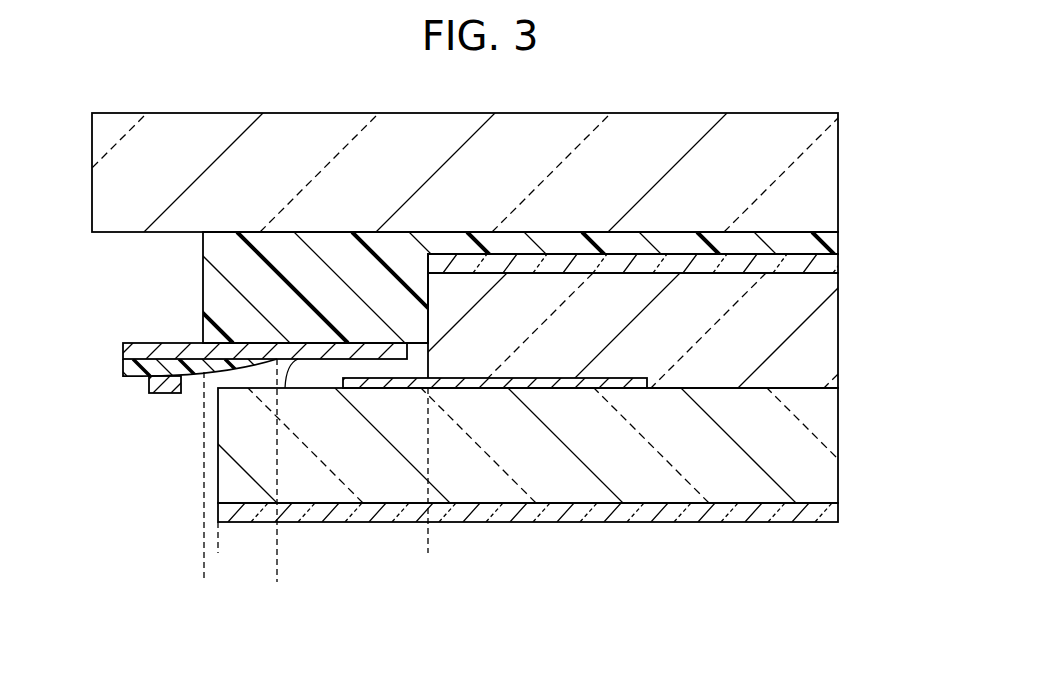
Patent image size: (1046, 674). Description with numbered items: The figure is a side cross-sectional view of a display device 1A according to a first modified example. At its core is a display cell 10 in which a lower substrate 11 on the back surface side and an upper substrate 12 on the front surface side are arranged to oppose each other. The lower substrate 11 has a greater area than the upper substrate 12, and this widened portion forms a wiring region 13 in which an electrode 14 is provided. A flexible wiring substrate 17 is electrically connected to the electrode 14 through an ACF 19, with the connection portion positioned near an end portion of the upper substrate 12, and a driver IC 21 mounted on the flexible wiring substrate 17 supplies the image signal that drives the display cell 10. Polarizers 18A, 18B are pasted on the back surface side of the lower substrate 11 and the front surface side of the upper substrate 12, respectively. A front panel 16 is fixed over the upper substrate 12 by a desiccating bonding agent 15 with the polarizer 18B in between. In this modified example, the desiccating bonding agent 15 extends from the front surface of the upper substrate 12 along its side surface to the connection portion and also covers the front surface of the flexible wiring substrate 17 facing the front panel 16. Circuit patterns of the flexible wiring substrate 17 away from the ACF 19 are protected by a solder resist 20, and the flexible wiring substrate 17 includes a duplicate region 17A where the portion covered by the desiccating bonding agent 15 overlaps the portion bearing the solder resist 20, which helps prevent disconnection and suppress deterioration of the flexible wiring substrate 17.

The display device 1A is at (672, 74).
The display cell 10 is at (563, 390).
The lower substrate 11 is at (802, 448).
The upper substrate 12 is at (808, 338).
The wiring region 13 is at (218, 553).
The electrode 14 is at (630, 388).
The desiccating bonding agent 15 is at (815, 243).
The front panel 16 is at (803, 173).
The flexible wiring substrate 17 is at (130, 352).
The duplicate region 17A is at (277, 578).
The polarizer 18A is at (562, 513).
The polarizer 18B is at (810, 263).
The ACF 19 is at (300, 378).
The solder resist 20 is at (130, 370).
The driver IC 21 is at (150, 387).